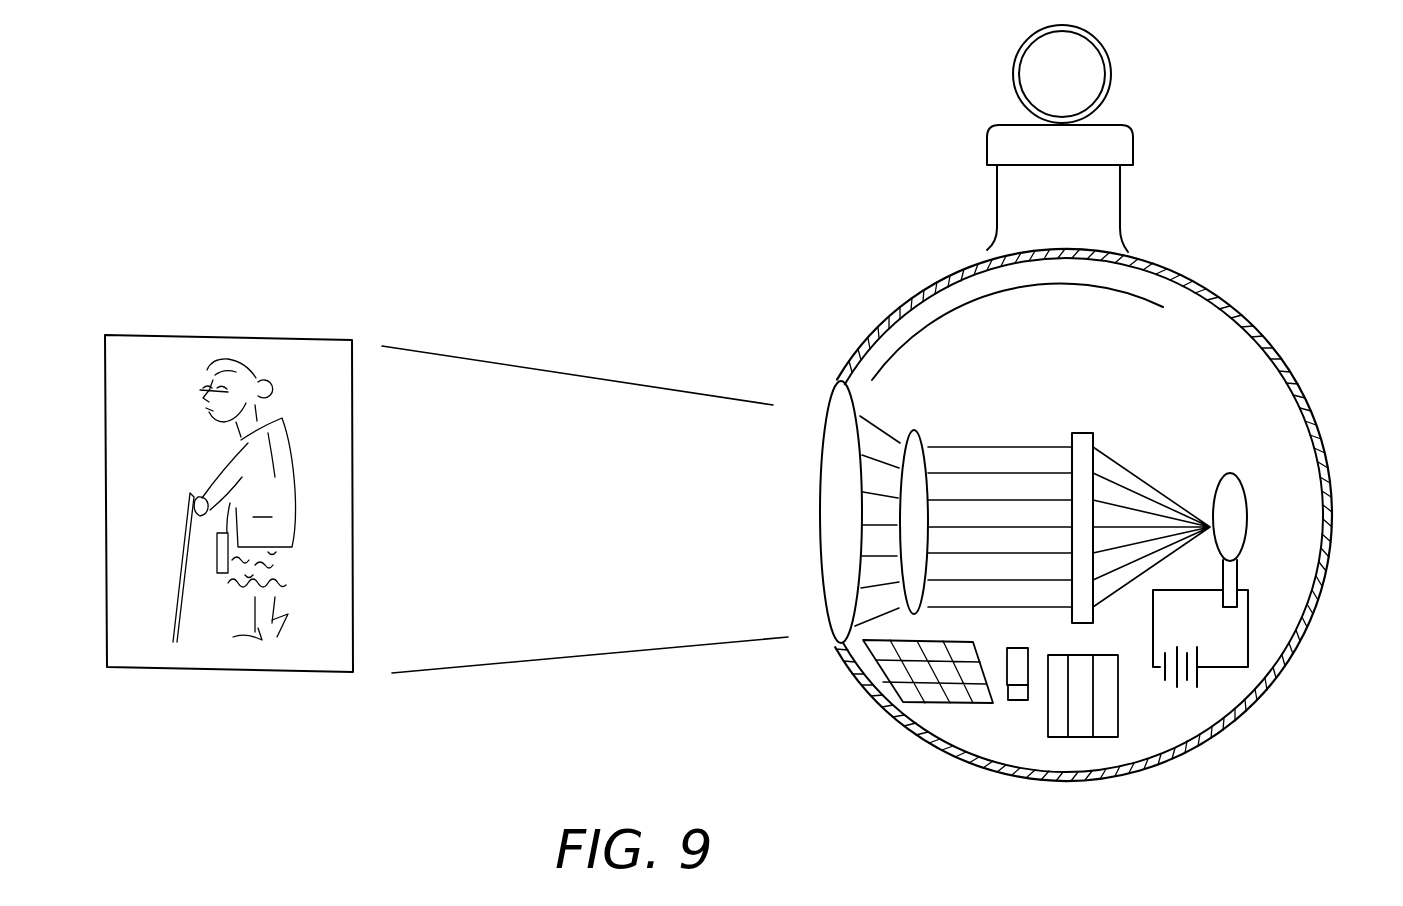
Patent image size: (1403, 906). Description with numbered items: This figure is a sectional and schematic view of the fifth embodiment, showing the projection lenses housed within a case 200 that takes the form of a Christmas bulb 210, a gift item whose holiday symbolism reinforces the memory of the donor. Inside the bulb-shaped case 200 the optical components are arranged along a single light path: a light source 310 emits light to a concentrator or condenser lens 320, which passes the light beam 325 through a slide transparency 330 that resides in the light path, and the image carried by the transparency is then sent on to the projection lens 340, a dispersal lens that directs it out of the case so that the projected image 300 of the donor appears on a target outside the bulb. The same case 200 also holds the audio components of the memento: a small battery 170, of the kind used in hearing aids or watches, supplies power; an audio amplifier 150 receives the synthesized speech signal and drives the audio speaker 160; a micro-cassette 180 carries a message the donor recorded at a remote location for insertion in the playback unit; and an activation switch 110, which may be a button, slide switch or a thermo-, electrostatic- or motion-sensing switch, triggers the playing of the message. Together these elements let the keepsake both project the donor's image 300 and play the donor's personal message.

The activation switch 110 is at (1015, 702).
The audio amplifier 150 is at (1052, 738).
The audio speaker 160 is at (885, 689).
The battery 170 is at (1197, 673).
The micro-cassette 180 is at (1119, 718).
The case 200 is at (1190, 287).
The Christmas bulb 210 is at (1190, 287).
The image 300 is at (275, 413).
The light source 310 is at (1247, 527).
The condenser lens 320 is at (922, 432).
The light beam 325 is at (498, 662).
The slide transparency 330 is at (1093, 433).
The projection lens 340 is at (827, 637).